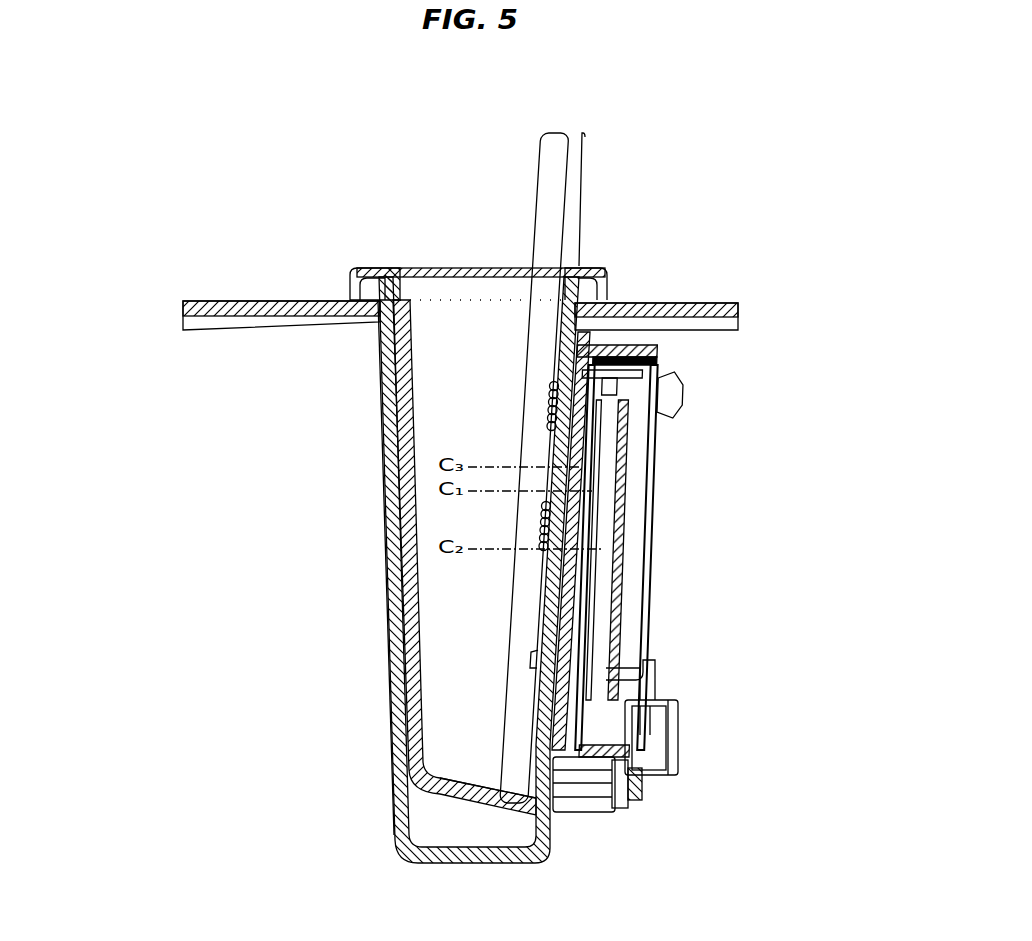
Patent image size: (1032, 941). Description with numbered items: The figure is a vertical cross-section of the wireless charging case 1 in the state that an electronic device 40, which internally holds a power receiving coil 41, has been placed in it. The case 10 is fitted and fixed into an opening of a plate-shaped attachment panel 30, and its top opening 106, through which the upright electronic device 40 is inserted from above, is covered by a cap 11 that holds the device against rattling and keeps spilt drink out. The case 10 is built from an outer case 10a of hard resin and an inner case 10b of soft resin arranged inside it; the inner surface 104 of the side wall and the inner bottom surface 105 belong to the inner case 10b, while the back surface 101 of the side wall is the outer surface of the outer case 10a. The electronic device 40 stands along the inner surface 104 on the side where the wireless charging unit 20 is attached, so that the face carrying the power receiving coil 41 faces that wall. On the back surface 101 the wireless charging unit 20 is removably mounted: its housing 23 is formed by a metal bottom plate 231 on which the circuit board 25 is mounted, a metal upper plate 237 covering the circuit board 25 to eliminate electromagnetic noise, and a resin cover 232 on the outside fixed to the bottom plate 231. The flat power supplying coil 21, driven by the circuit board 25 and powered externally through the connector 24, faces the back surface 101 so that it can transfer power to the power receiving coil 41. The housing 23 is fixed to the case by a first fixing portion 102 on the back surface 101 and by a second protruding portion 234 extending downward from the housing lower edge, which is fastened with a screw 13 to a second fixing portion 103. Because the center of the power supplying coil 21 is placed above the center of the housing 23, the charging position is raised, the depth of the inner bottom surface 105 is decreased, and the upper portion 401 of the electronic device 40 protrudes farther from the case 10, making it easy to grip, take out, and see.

The wireless charging case 1 is at (357, 158).
The electronic device 40 is at (557, 146).
The upper portion 401 is at (582, 196).
The opening 106 is at (398, 268).
The cap 11 is at (503, 267).
The attachment panel 30 is at (293, 300).
The cover 232 is at (654, 349).
The bottom plate 231 is at (640, 394).
The upper plate 237 is at (597, 428).
The housing 23 is at (745, 410).
The first fixing portion 102 is at (660, 414).
The wireless charging unit 20 is at (656, 471).
The circuit board 25 is at (624, 540).
The power supplying coil 21 is at (601, 578).
The back surface 101 is at (572, 638).
The case 10 is at (379, 462).
The power receiving coil 41 is at (543, 528).
The inner surface 104 is at (529, 665).
The inner case 10b is at (411, 712).
The inner bottom surface 105 is at (457, 790).
The outer case 10a is at (395, 825).
The connector 24 is at (679, 741).
The screw 13 is at (641, 787).
The second protruding portion 234 is at (624, 796).
The second fixing portion 103 is at (573, 797).